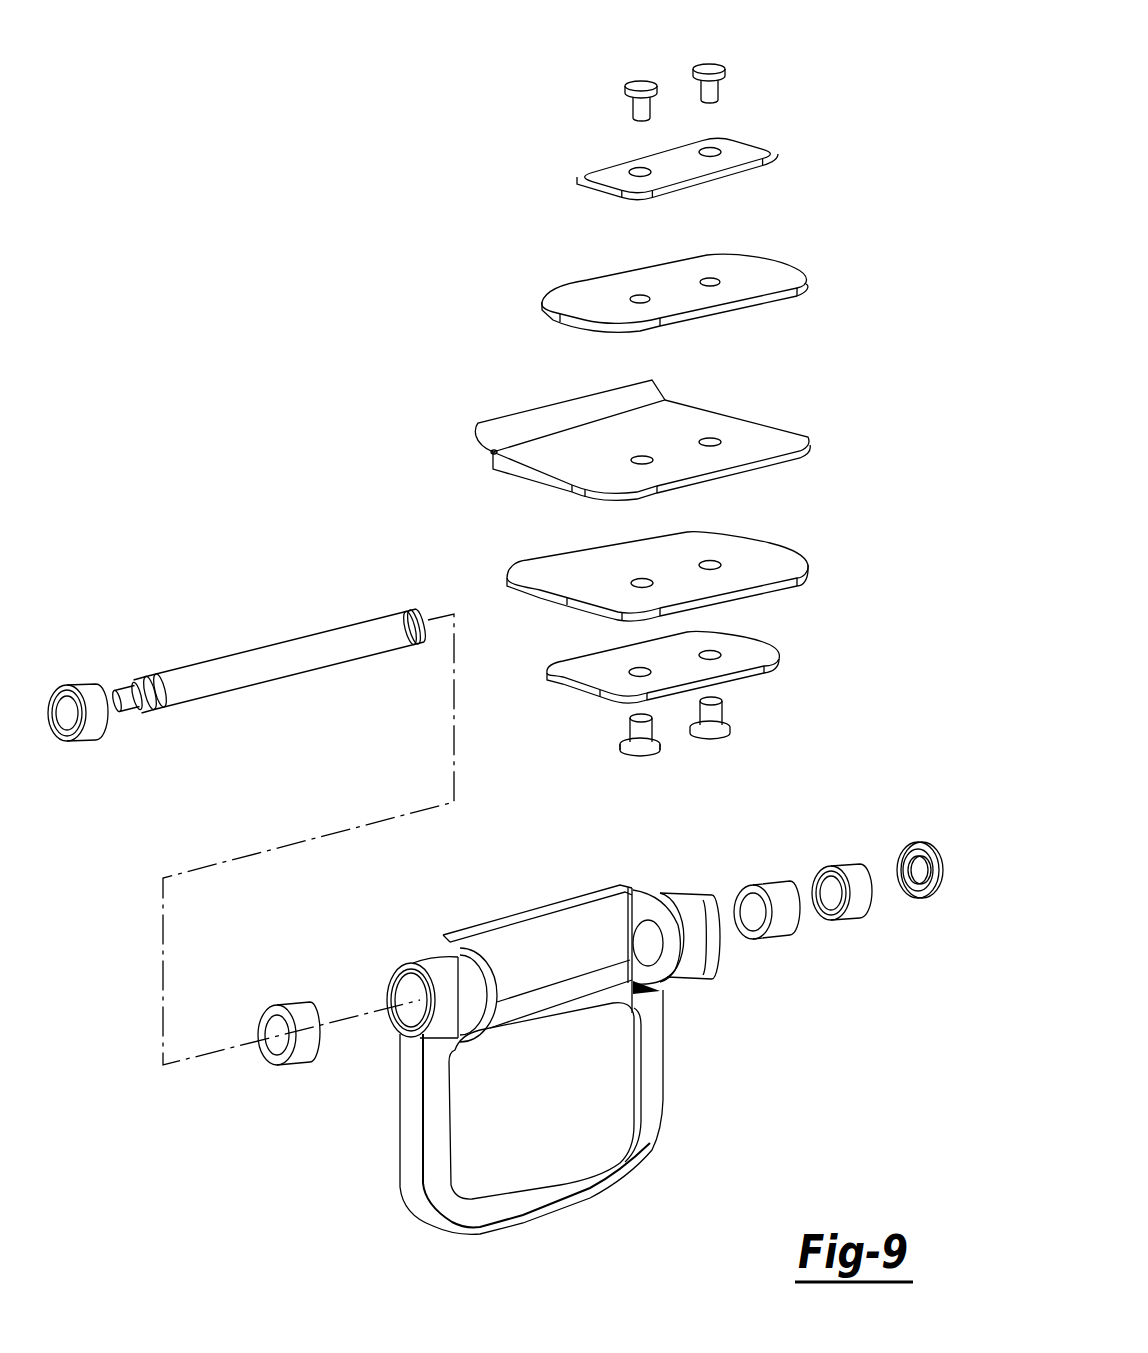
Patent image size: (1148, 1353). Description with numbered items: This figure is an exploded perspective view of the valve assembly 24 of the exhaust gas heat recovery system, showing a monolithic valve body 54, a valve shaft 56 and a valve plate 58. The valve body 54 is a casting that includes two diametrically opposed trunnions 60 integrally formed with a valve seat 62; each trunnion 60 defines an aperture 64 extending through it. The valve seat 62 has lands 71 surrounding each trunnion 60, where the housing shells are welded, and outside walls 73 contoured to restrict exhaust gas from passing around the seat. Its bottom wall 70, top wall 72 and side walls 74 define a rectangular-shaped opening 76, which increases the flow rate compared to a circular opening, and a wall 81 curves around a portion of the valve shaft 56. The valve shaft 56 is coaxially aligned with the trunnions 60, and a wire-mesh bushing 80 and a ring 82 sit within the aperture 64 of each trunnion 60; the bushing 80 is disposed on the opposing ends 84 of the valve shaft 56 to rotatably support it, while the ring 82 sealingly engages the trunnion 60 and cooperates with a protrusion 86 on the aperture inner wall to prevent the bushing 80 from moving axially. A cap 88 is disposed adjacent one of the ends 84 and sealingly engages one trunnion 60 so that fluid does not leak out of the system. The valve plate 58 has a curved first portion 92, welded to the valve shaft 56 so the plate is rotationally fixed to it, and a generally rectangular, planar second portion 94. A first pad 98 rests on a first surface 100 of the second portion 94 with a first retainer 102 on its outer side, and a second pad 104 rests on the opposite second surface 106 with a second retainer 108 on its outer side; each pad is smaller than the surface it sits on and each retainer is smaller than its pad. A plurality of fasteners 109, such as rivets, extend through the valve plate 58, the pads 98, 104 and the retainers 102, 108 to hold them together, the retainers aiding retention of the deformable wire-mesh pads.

The valve assembly 24 is at (395, 308).
The valve body 54 is at (557, 1006).
The valve shaft 56 is at (268, 682).
The valve plate 58 is at (619, 423).
The trunnion 60 is at (407, 945).
The valve seat 62 is at (582, 1116).
The aperture 64 is at (645, 943).
The bottom wall 70 is at (573, 1200).
The land 71 is at (452, 952).
The top wall 72 is at (551, 899).
The outside wall 73 is at (463, 950).
The side wall 74 is at (439, 1124).
The rectangular-shaped opening 76 is at (577, 1148).
The wire-mesh bushing 80 is at (300, 1050).
The wall 81 is at (575, 927).
The ring 82 is at (82, 690).
The end 84 is at (405, 612).
The protrusion 86 is at (647, 910).
The cap 88 is at (925, 845).
The first portion 92 is at (648, 390).
The second portion 94 is at (783, 457).
The first pad 98 is at (783, 577).
The first surface 100 is at (560, 486).
The first retainer 102 is at (757, 650).
The second pad 104 is at (805, 272).
The second surface 106 is at (580, 462).
The second retainer 108 is at (745, 150).
The fastener 109 is at (706, 62).